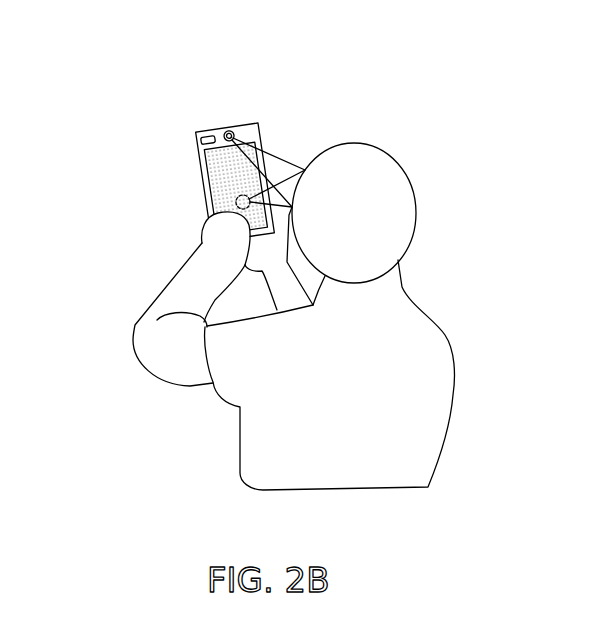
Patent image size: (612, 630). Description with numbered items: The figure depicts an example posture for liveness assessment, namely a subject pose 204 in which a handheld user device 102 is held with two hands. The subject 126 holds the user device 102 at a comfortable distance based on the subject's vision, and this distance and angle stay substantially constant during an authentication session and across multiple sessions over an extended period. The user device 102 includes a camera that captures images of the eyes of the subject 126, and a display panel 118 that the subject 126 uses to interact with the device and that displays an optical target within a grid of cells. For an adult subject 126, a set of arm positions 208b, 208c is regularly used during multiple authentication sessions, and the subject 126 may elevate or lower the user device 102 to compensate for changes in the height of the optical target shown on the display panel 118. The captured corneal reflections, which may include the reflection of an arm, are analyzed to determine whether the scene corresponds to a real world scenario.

The user device 102 is at (200, 160).
The display panel 118 is at (206, 160).
The subject 126 is at (265, 432).
The subject pose 204 is at (296, 325).
The arm position 208b is at (280, 282).
The arm position 208c is at (167, 354).